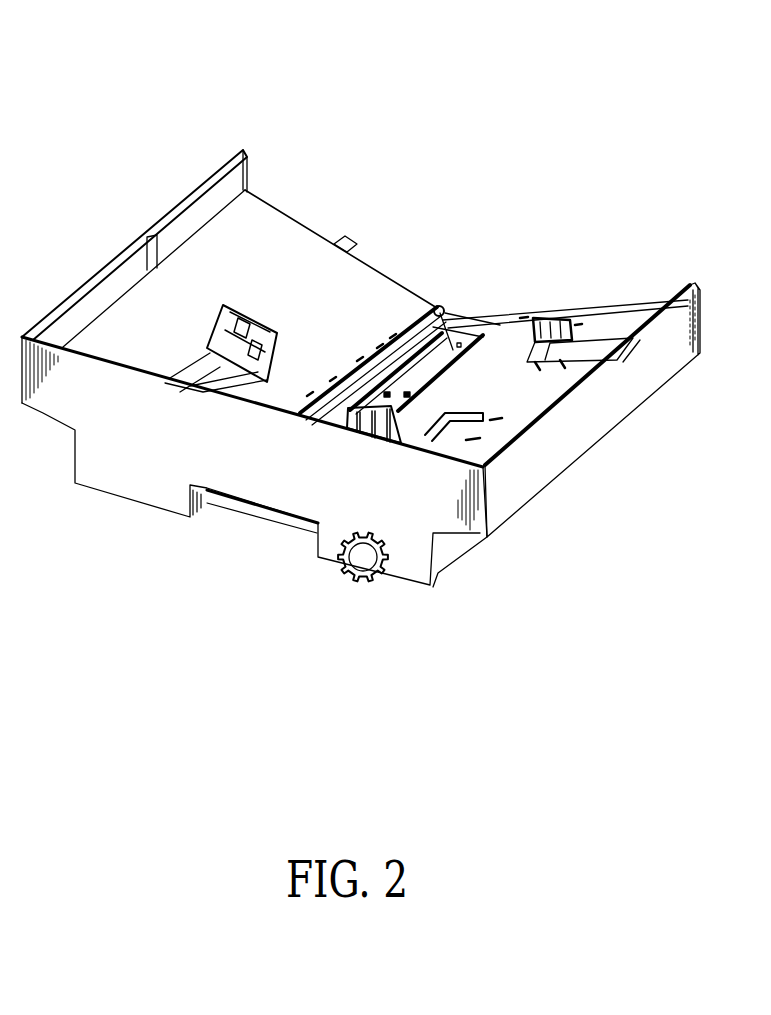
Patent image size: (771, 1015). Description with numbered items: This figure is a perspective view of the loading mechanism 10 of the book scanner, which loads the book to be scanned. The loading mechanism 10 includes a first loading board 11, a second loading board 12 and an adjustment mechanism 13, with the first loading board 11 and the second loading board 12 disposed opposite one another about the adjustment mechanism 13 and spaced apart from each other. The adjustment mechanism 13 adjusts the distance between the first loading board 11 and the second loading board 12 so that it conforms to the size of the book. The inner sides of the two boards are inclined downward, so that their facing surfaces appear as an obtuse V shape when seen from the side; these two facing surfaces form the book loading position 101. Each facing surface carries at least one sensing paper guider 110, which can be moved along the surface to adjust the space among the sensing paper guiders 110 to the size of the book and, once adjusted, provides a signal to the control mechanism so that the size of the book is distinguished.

The loading mechanism 10 is at (98, 48).
The book loading position 101 is at (292, 240).
The first loading board 11 is at (397, 307).
The second loading board 12 is at (523, 410).
The adjustment mechanism 13 is at (450, 322).
The sensing paper guider 110 is at (577, 330).